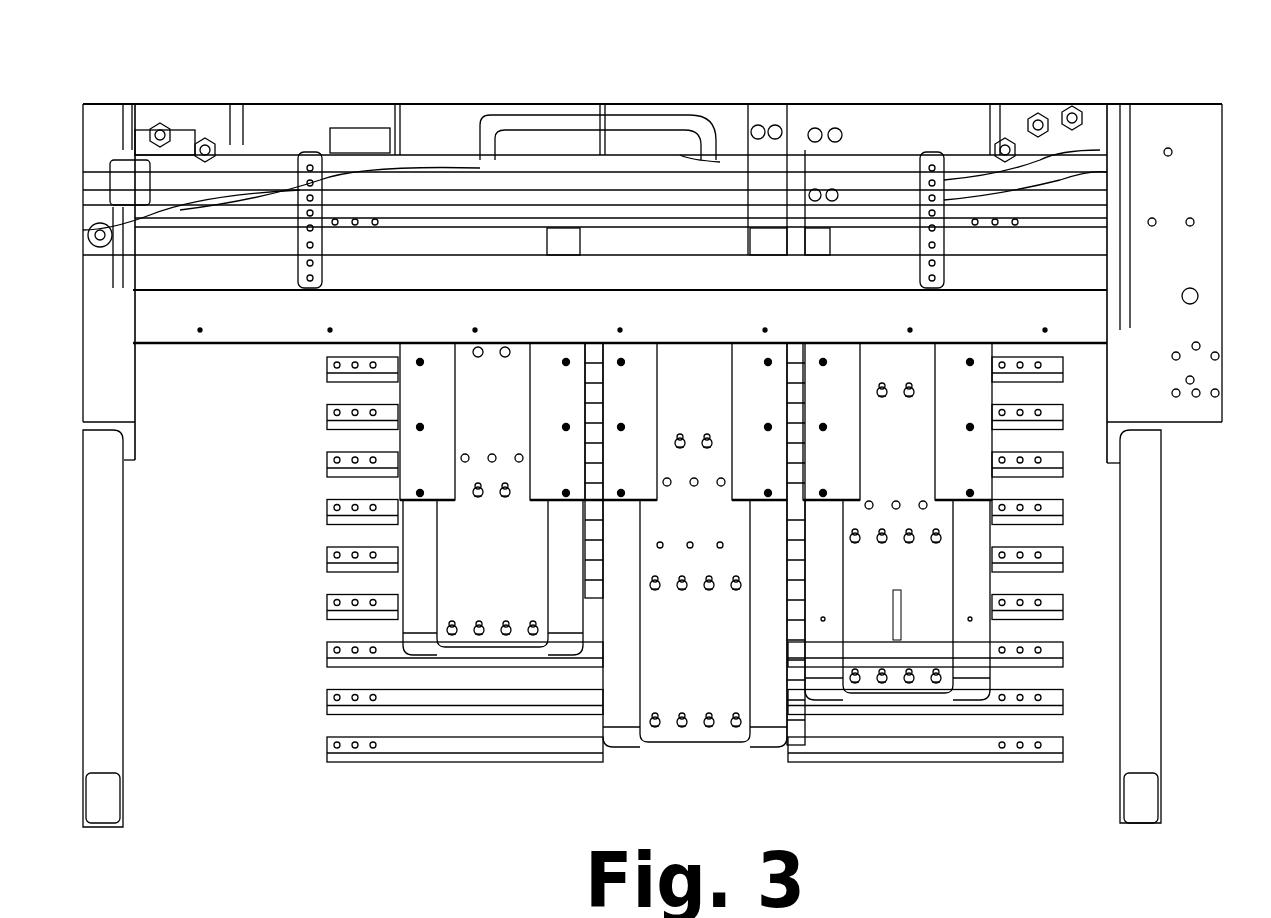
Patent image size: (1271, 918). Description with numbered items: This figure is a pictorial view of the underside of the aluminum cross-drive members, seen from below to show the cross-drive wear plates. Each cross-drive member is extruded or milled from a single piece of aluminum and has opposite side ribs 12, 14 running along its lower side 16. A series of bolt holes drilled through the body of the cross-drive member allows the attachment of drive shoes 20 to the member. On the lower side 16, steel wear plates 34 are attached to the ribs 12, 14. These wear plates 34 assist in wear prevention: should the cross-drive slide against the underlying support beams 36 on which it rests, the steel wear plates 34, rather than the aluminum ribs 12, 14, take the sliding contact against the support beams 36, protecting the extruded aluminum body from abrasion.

The side rib 12 is at (418, 598).
The side rib 14 is at (568, 572).
The lower side 16 is at (480, 540).
The drive shoes 20 is at (425, 745).
The steel wear plates 34 is at (553, 388).
The underlying support beams 36 is at (190, 285).